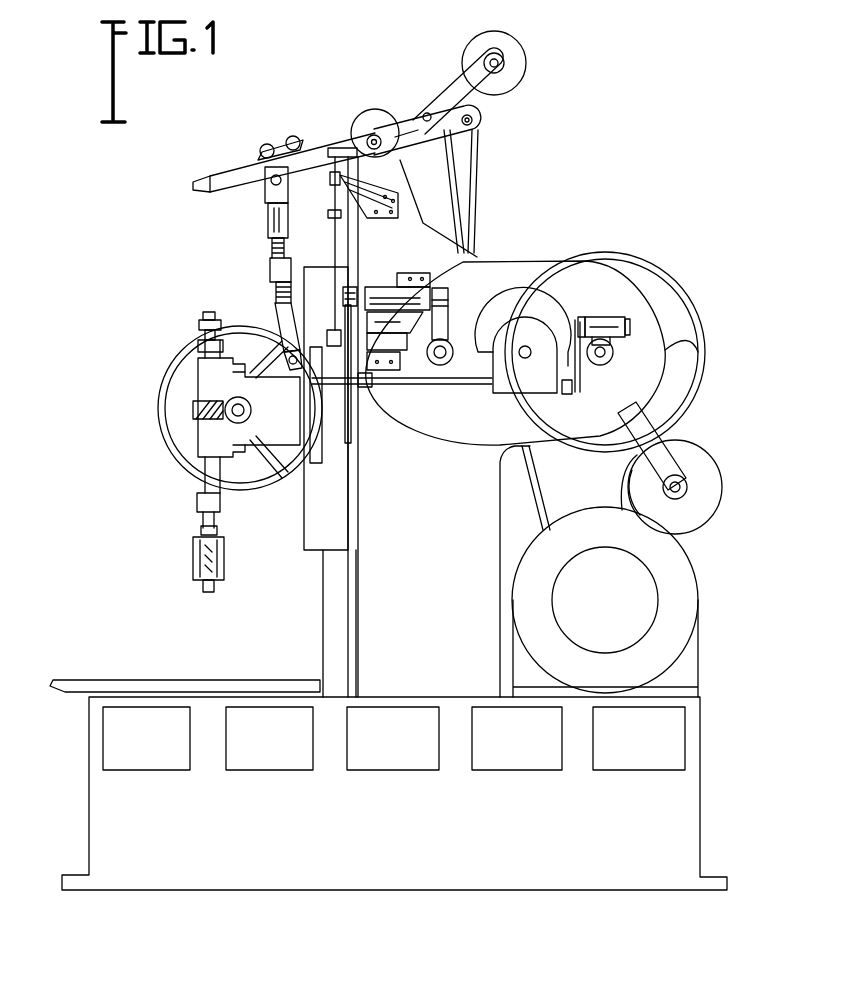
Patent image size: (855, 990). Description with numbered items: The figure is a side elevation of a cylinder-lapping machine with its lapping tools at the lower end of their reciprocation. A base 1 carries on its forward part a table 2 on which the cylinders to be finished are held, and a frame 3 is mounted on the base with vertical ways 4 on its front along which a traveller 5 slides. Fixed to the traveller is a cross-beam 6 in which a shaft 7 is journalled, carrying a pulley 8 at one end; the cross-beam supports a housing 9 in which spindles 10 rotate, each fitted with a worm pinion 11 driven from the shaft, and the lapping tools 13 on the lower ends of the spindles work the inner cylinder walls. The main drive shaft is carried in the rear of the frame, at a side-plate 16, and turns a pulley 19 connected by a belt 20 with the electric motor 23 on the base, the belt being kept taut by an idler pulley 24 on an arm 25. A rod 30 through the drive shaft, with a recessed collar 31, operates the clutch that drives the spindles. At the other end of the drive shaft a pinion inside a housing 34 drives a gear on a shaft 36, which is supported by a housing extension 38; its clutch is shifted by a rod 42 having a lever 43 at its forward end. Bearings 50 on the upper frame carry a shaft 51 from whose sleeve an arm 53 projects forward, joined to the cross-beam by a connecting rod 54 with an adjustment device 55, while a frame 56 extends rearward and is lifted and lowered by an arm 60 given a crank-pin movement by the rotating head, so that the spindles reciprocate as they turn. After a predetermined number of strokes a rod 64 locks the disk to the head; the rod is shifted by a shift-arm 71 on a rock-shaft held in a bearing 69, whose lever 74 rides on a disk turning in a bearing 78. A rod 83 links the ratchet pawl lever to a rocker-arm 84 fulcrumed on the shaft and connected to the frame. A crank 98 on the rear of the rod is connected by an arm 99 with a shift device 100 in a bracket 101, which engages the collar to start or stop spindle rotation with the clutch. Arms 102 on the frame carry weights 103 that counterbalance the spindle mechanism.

The base 1 is at (118, 797).
The table 2 is at (145, 686).
The frame 3 is at (370, 252).
The vertical ways 4 is at (335, 578).
The traveller 5 is at (313, 515).
The cross-beam 6 is at (275, 338).
The shaft 7 is at (232, 417).
The pulley 8 is at (247, 487).
The housing 9 is at (202, 377).
The spindles 10 is at (205, 478).
The worm pinion 11 is at (192, 410).
The lapping tools 13 is at (193, 557).
The side-plate 16 is at (485, 500).
The pulley 19 is at (660, 297).
The belt 20 is at (700, 393).
The electric motor 23 is at (677, 582).
The idler pulley 24 is at (705, 477).
The arm 25 is at (680, 437).
The rod 30 is at (613, 352).
The recessed collar 31 is at (606, 360).
The housing 34 is at (583, 287).
The shaft 36 is at (524, 345).
The housing extension 38 is at (510, 340).
The rod 42 is at (415, 385).
The lever 43 is at (315, 442).
The bearings 50 is at (364, 128).
The shaft 51 is at (392, 150).
The arm 53 is at (318, 147).
The connecting rod 54 is at (276, 215).
The adjustment device 55 is at (272, 270).
The frame 56 is at (452, 140).
The arm 60 is at (462, 190).
The rod 64 is at (445, 358).
The bearing 69 is at (390, 287).
The shift-arm 71 is at (478, 262).
The lever 74 is at (352, 410).
The bearing 78 is at (375, 325).
The rod 83 is at (333, 208).
The rocker-arm 84 is at (408, 135).
The crank 98 is at (567, 393).
The arm 99 is at (583, 360).
The shift device 100 is at (600, 325).
The bracket 101 is at (618, 317).
The arms 102 is at (443, 92).
The weights 103 is at (524, 65).